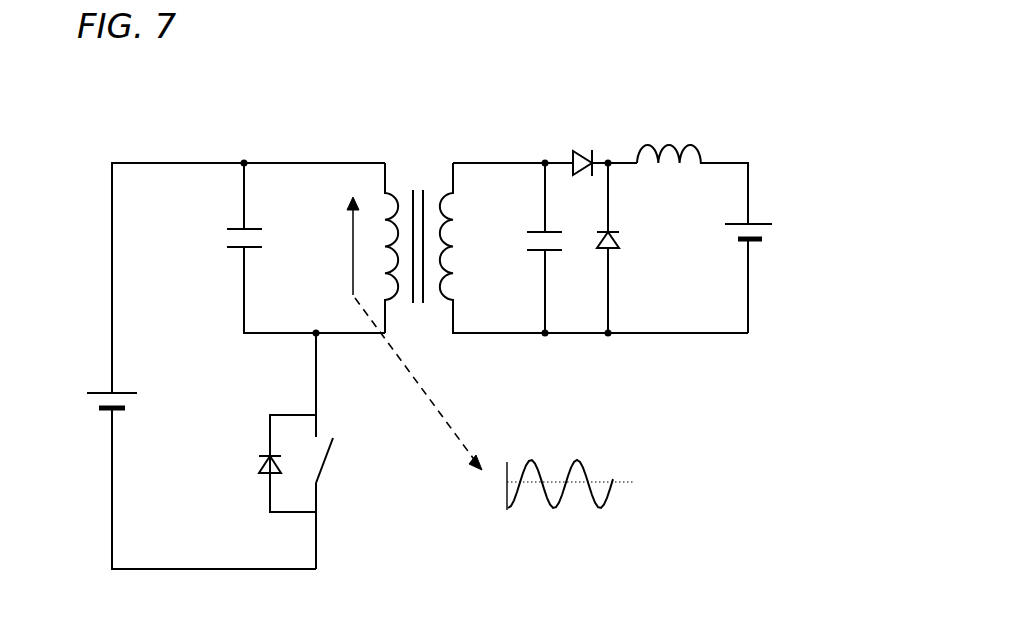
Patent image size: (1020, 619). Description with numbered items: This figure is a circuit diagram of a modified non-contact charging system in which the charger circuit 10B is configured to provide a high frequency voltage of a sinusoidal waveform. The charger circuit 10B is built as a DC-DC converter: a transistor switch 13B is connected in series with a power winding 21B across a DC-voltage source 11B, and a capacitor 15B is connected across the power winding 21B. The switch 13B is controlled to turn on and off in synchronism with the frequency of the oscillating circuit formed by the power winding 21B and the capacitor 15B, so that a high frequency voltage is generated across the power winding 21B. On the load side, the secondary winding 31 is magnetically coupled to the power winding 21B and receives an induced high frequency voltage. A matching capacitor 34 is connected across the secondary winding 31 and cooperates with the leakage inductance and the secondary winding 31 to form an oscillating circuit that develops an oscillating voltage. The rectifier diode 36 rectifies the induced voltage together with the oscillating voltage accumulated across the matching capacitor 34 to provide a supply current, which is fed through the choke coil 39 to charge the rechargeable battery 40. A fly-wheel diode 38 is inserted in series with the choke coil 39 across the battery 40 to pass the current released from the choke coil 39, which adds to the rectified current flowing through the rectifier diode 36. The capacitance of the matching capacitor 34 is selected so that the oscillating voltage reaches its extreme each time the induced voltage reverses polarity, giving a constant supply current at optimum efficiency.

The charger circuit 10B is at (188, 163).
The DC-voltage source 11B is at (143, 395).
The transistor switch 13B is at (340, 467).
The capacitor 15B is at (217, 238).
The power winding 21B is at (382, 212).
The secondary winding 31 is at (442, 197).
The matching capacitor 34 is at (520, 238).
The rectifier diode 36 is at (577, 142).
The fly-wheel diode 38 is at (632, 242).
The choke coil 39 is at (660, 140).
The rechargeable battery 40 is at (772, 232).